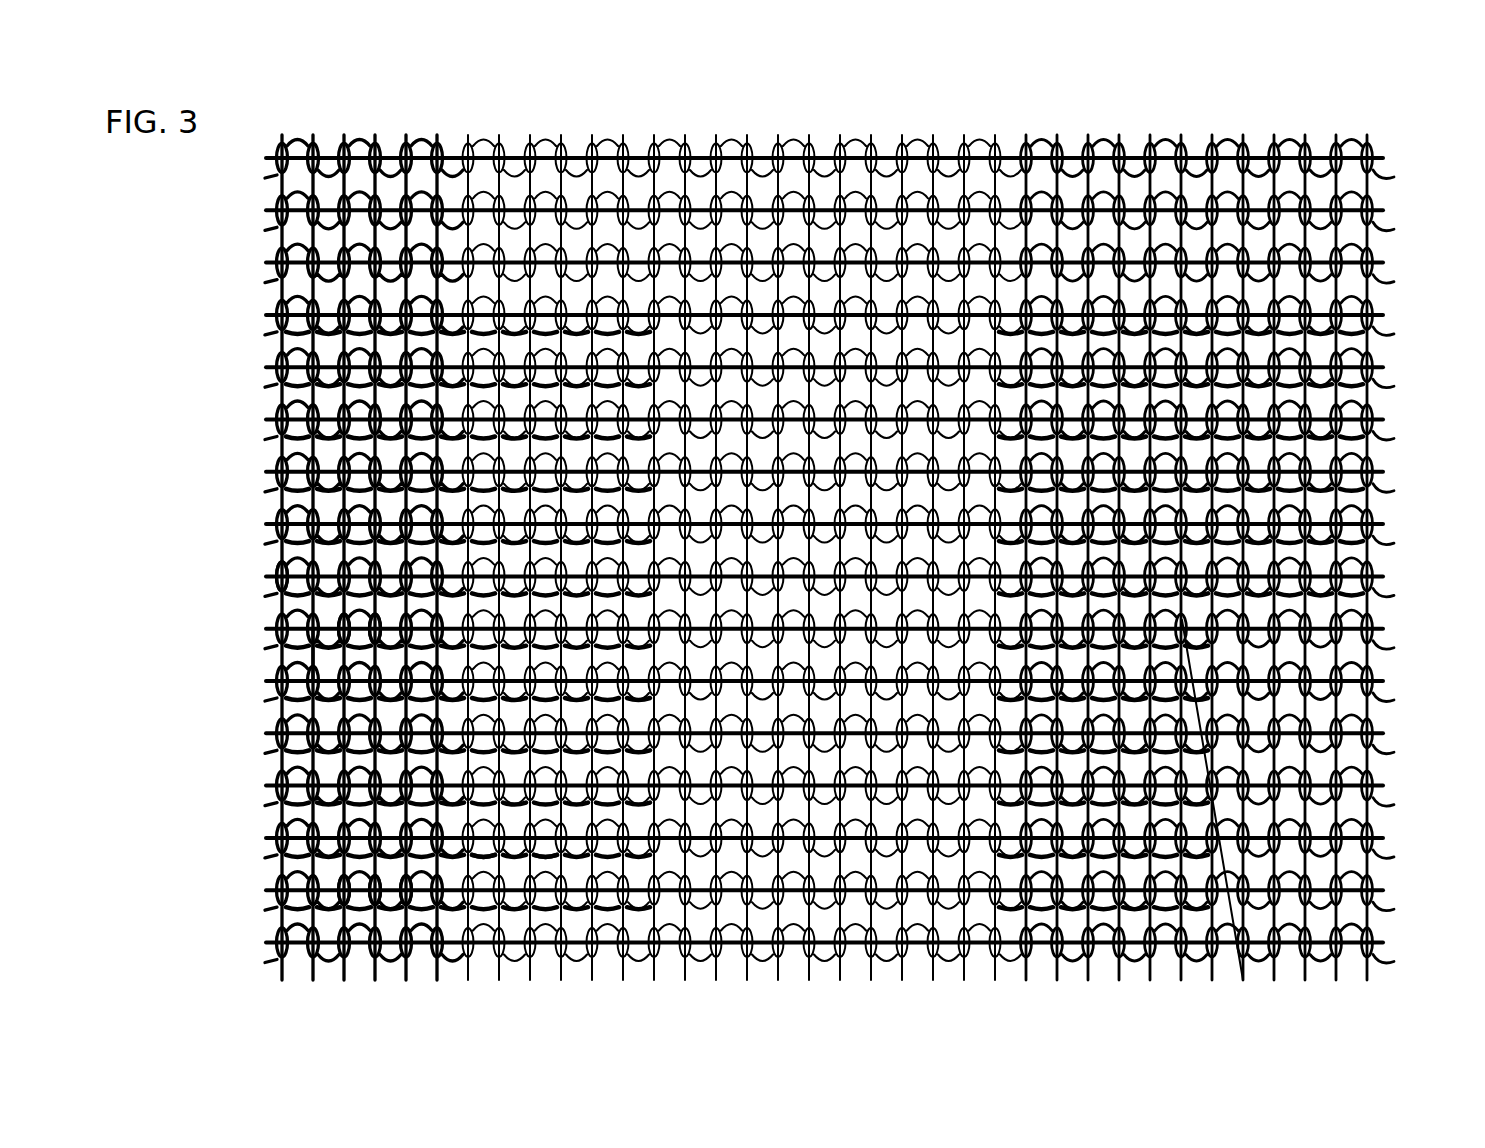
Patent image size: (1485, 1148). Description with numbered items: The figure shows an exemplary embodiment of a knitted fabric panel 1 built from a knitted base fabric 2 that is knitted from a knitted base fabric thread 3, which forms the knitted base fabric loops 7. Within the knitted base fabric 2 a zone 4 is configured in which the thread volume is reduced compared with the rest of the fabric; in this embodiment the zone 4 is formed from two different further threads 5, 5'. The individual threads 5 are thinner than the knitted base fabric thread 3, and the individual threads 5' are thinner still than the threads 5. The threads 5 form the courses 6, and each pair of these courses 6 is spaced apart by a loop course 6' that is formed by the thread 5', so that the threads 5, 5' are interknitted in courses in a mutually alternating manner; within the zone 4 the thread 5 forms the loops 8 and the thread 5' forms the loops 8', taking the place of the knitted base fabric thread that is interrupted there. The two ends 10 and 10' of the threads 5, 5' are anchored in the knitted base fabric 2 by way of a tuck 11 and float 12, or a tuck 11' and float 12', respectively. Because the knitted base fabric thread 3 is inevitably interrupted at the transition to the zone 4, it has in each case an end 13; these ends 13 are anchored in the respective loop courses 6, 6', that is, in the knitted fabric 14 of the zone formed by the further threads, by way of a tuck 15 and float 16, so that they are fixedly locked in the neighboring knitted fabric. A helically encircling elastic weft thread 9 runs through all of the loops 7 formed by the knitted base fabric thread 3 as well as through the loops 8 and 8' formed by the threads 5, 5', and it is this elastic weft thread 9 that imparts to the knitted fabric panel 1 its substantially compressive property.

The knitted fabric panel 1 is at (228, 300).
The knitted base fabric 2 is at (256, 250).
The knitted base fabric thread 3 is at (268, 286).
The zone 4 is at (1185, 300).
The further thread 5 is at (859, 399).
The further thread 5' is at (863, 452).
The course 6 is at (1416, 756).
The loop course 6' is at (1419, 708).
The knitted base fabric loop 7 is at (355, 408).
The loop 8 is at (861, 557).
The loop 8' is at (866, 609).
The elastic weft thread 9 is at (283, 580).
The end 10 is at (345, 950).
The end 10' is at (249, 655).
The tuck 11 is at (416, 946).
The tuck 11' is at (274, 620).
The float 12 is at (383, 950).
The float 12' is at (288, 662).
The end 13 is at (548, 855).
The knitted fabric 14 is at (1192, 812).
The tuck 15 is at (483, 857).
The float 16 is at (517, 857).